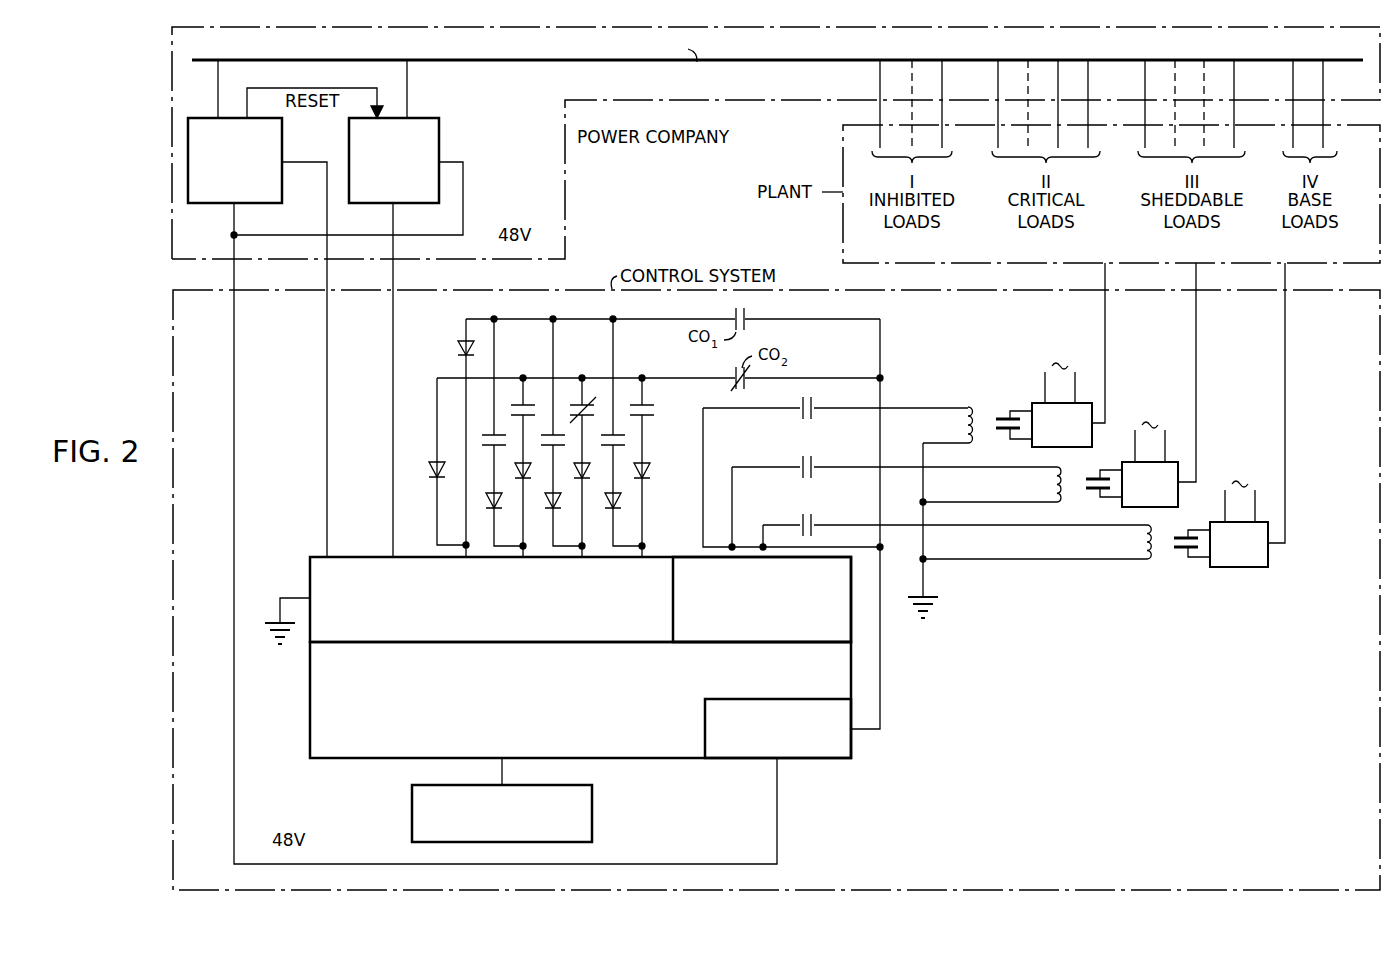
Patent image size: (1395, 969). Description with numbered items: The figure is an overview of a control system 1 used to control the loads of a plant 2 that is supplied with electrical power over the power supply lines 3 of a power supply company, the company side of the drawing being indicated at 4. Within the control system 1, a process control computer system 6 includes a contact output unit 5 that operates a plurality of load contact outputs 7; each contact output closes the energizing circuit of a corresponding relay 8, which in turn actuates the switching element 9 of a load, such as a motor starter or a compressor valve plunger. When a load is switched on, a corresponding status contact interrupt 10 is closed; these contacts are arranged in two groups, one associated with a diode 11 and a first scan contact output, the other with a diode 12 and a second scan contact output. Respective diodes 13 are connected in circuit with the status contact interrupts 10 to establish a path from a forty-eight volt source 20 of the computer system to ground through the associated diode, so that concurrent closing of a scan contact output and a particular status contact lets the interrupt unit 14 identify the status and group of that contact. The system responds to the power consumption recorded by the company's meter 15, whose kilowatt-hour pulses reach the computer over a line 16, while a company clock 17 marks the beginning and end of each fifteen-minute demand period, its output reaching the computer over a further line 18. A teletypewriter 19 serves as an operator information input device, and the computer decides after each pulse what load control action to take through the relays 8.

The control system 1 is at (858, 285).
The plant 2 is at (843, 220).
The power supply lines 3 is at (777, 47).
The power company 4 is at (817, 101).
The contact output unit 5 is at (851, 607).
The process control computer system 6 is at (859, 669).
The load contact outputs 7 is at (806, 420).
The relay 8 is at (970, 443).
The switching element 9 is at (1040, 403).
The status contact interrupt 10 is at (490, 447).
The diode 11 is at (458, 347).
The diode 12 is at (433, 462).
The diodes 13 is at (490, 501).
The interrupt unit 14 is at (310, 570).
The meter 15 is at (439, 130).
The line 16 is at (393, 310).
The clock 17 is at (282, 125).
The clock output line 18 is at (327, 345).
The teletypewriter 19 is at (593, 822).
The 48V source 20 is at (843, 755).